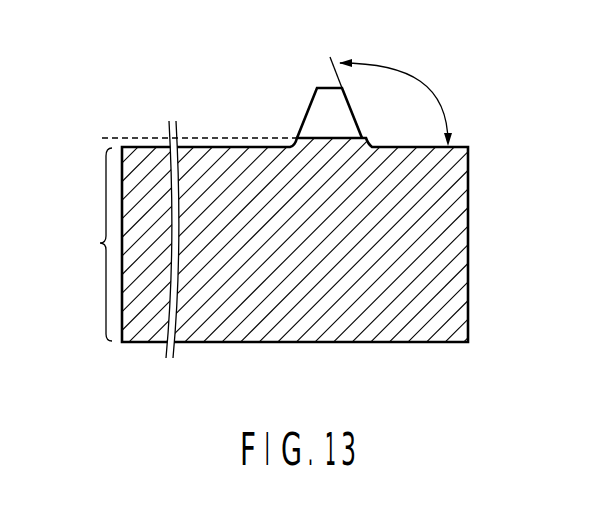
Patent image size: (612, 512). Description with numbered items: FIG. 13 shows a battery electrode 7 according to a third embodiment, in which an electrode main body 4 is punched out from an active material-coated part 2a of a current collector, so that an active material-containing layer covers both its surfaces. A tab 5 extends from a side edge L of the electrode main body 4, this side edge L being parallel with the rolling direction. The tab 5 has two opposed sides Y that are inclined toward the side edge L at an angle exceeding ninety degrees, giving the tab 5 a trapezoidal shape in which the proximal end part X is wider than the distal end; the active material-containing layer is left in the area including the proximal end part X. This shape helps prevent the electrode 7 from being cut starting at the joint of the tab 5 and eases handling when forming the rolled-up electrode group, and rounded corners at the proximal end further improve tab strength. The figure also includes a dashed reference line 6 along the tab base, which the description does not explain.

The active material-coated part 2a is at (331, 327).
The electrode 7 is at (487, 253).
The tab 5 is at (330, 88).
The reference plane line 6 is at (102, 138).
The electrode main body 4 is at (97, 244).
The two sides Y is at (307, 112).
The proximal end part X is at (330, 138).
The side edge L is at (461, 146).